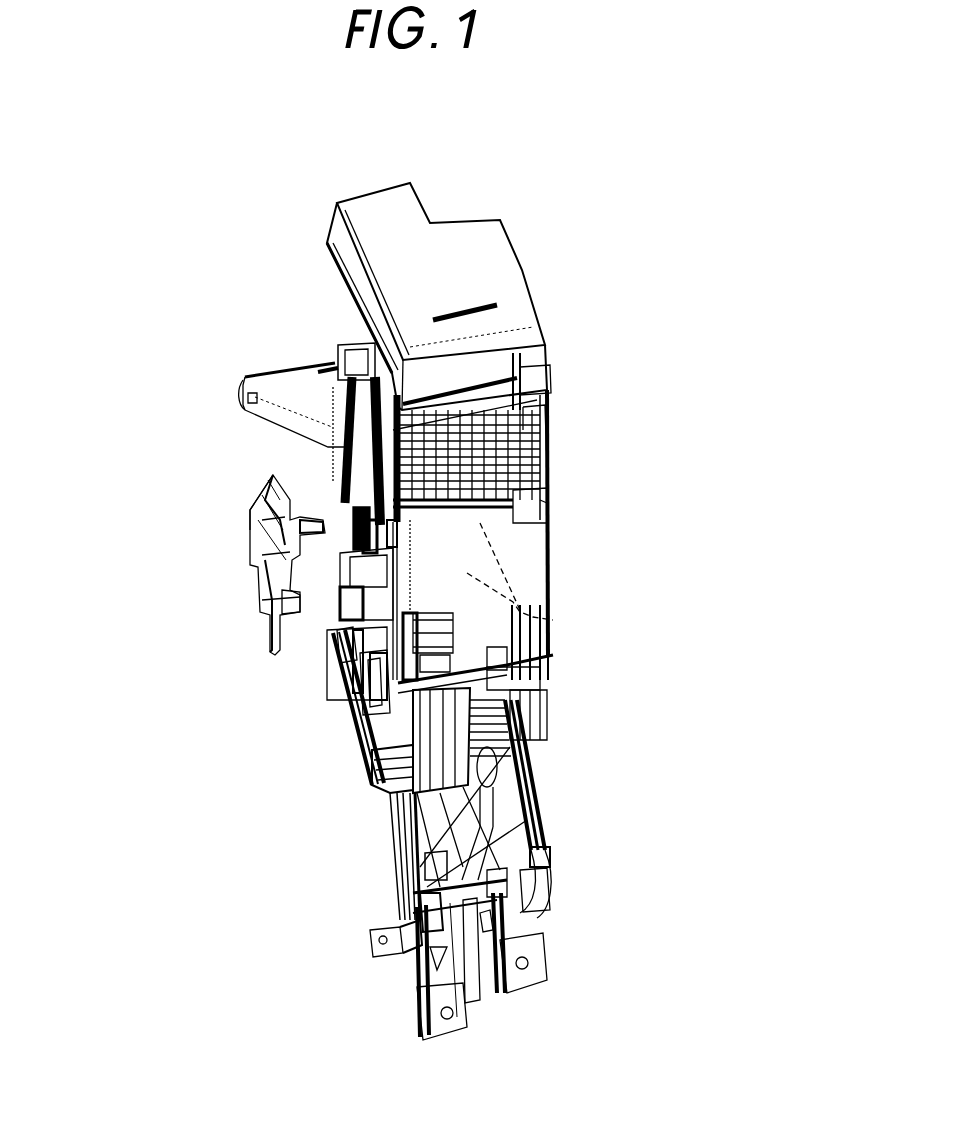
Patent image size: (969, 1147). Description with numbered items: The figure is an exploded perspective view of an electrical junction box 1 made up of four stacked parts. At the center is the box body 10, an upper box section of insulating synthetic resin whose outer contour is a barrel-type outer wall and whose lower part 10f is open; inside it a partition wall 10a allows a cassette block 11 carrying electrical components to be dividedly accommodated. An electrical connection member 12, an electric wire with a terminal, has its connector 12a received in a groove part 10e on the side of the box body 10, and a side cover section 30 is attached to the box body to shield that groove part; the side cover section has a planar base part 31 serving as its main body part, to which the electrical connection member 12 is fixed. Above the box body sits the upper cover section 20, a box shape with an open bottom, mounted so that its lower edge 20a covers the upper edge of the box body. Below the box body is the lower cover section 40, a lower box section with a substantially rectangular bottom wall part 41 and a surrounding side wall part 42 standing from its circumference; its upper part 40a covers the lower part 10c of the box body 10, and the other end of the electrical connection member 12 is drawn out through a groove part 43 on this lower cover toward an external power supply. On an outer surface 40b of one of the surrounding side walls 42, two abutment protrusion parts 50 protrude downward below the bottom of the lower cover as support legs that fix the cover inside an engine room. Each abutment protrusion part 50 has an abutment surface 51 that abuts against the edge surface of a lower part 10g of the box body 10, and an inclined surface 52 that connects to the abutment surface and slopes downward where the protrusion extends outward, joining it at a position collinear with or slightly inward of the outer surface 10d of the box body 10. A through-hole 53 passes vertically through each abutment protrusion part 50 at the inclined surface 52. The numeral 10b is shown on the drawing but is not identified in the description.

The electrical junction box 1 is at (443, 180).
The box body 10 is at (573, 543).
The partition wall 10a is at (540, 418).
The lock portion 10b is at (320, 368).
The lower part of the box body 10c is at (337, 498).
The outer surface of the box body 10d is at (333, 450).
The groove part 10e is at (378, 512).
The lower part of the box body 10f is at (550, 620).
The lower part of the box body 10g is at (520, 733).
The cassette block 11 is at (540, 697).
The electrical connection member 12 is at (293, 598).
The connector 12a is at (232, 506).
The upper cover section 20 is at (503, 294).
The lower edge of the upper cover section 20a is at (550, 400).
The side cover section 30 is at (240, 560).
The planar base part 31 is at (260, 553).
The lower cover section 40 is at (323, 720).
The upper part of the lower cover section 40a is at (360, 735).
The outer surface of the lower cover section 40b is at (473, 913).
The bottom wall part 41 is at (470, 865).
The surrounding side wall part 42 is at (415, 760).
The groove part 43 is at (410, 800).
The abutment protrusion part 50 is at (417, 1000).
The abutment surface 51 is at (427, 883).
The inclined surface 52 is at (473, 925).
The through-hole 53 is at (417, 933).